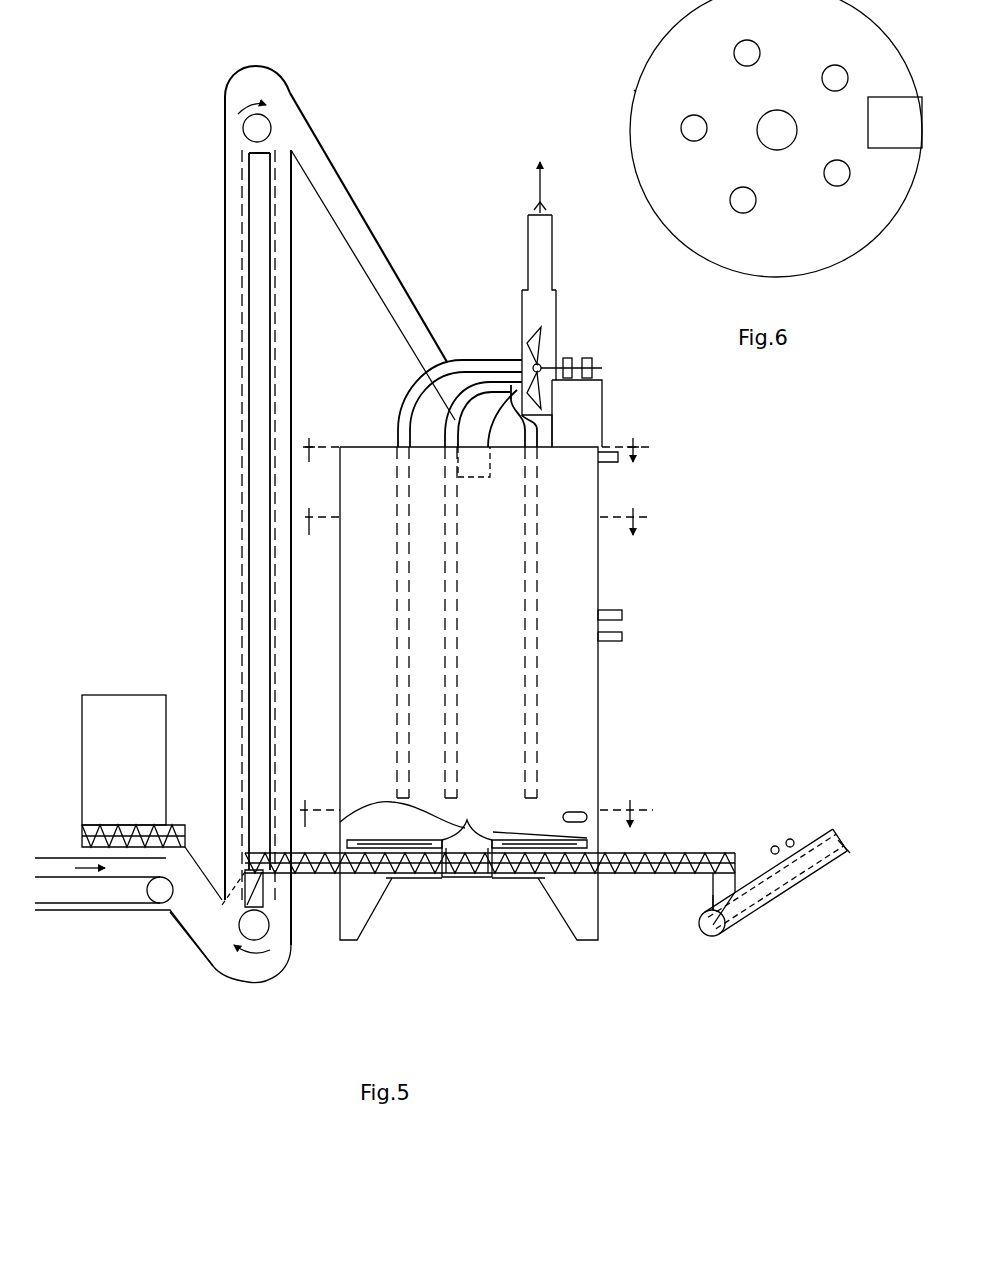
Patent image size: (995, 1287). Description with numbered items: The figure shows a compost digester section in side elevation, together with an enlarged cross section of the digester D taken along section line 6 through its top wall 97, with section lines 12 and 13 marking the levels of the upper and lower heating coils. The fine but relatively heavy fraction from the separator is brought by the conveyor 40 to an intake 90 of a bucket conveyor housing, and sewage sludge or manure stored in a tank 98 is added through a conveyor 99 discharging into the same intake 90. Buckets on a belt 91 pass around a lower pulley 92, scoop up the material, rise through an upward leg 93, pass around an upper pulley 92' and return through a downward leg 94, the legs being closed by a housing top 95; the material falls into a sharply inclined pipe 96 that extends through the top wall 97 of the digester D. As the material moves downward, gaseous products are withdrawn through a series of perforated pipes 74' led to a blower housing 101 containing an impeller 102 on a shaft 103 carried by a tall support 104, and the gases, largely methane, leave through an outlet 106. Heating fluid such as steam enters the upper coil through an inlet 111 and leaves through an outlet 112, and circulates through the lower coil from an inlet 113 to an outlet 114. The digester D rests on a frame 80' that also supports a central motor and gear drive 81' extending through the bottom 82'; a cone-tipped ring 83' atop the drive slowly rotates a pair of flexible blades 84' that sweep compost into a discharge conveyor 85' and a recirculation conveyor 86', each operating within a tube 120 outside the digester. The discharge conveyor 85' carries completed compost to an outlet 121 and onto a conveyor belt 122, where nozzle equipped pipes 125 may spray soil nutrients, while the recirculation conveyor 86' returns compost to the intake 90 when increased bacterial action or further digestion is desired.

In FIG. 5, the conveyor 40 is at (56, 880).
In FIG. 5, the section line 6— 6 is at (476, 438).
In FIG. 5, the section line 12— 12 is at (474, 510).
In FIG. 5, the section line 13— 13 is at (474, 802).
In FIG. 5, the pipes 74' is at (467, 622).
In FIG. 6, the pipes 74' is at (768, 118).
In FIG. 5, the frame 80' is at (490, 895).
In FIG. 5, the motor and gear drive 81' is at (467, 873).
In FIG. 5, the bottom 82' is at (463, 824).
In FIG. 5, the ring 83' is at (474, 814).
In FIG. 5, the flexible blades 84' is at (467, 830).
In FIG. 5, the discharge conveyor 85' is at (518, 892).
In FIG. 5, the recirculation conveyor 86' is at (414, 892).
In FIG. 5, the intake 90 is at (214, 986).
In FIG. 5, the belt 91 is at (238, 636).
In FIG. 5, the lower pulley 92 is at (276, 931).
In FIG. 5, the upper pulley 92' is at (230, 124).
In FIG. 5, the upward leg 93 is at (224, 455).
In FIG. 5, the downward leg 94 is at (292, 632).
In FIG. 5, the housing top 95 is at (283, 84).
In FIG. 5, the pipe 96 is at (382, 254).
In FIG. 6, the pipe 96 is at (770, 148).
In FIG. 5, the top wall 97 is at (380, 447).
In FIG. 6, the top wall 97 is at (668, 47).
In FIG. 5, the tank 98 is at (122, 695).
In FIG. 5, the conveyor 99 is at (168, 830).
In FIG. 5, the blower housing 101 is at (522, 322).
In FIG. 5, the impeller 102 is at (546, 352).
In FIG. 5, the shaft 103 is at (598, 368).
In FIG. 5, the support 104 is at (602, 413).
In FIG. 6, the support 104 is at (912, 136).
In FIG. 5, the outlet 106 is at (578, 263).
In FIG. 5, the inlet 111 is at (604, 458).
In FIG. 5, the outlet 112 is at (616, 613).
In FIG. 5, the inlet 113 is at (615, 641).
In FIG. 5, the outlet 114 is at (588, 812).
In FIG. 5, the tube 120 is at (652, 856).
In FIG. 5, the outlet 121 is at (712, 893).
In FIG. 5, the conveyor belt 122 is at (793, 888).
In FIG. 5, the nozzle equipped pipes 125 is at (770, 848).
In FIG. 5, the digester D is at (600, 734).
In FIG. 6, the digester D is at (634, 90).